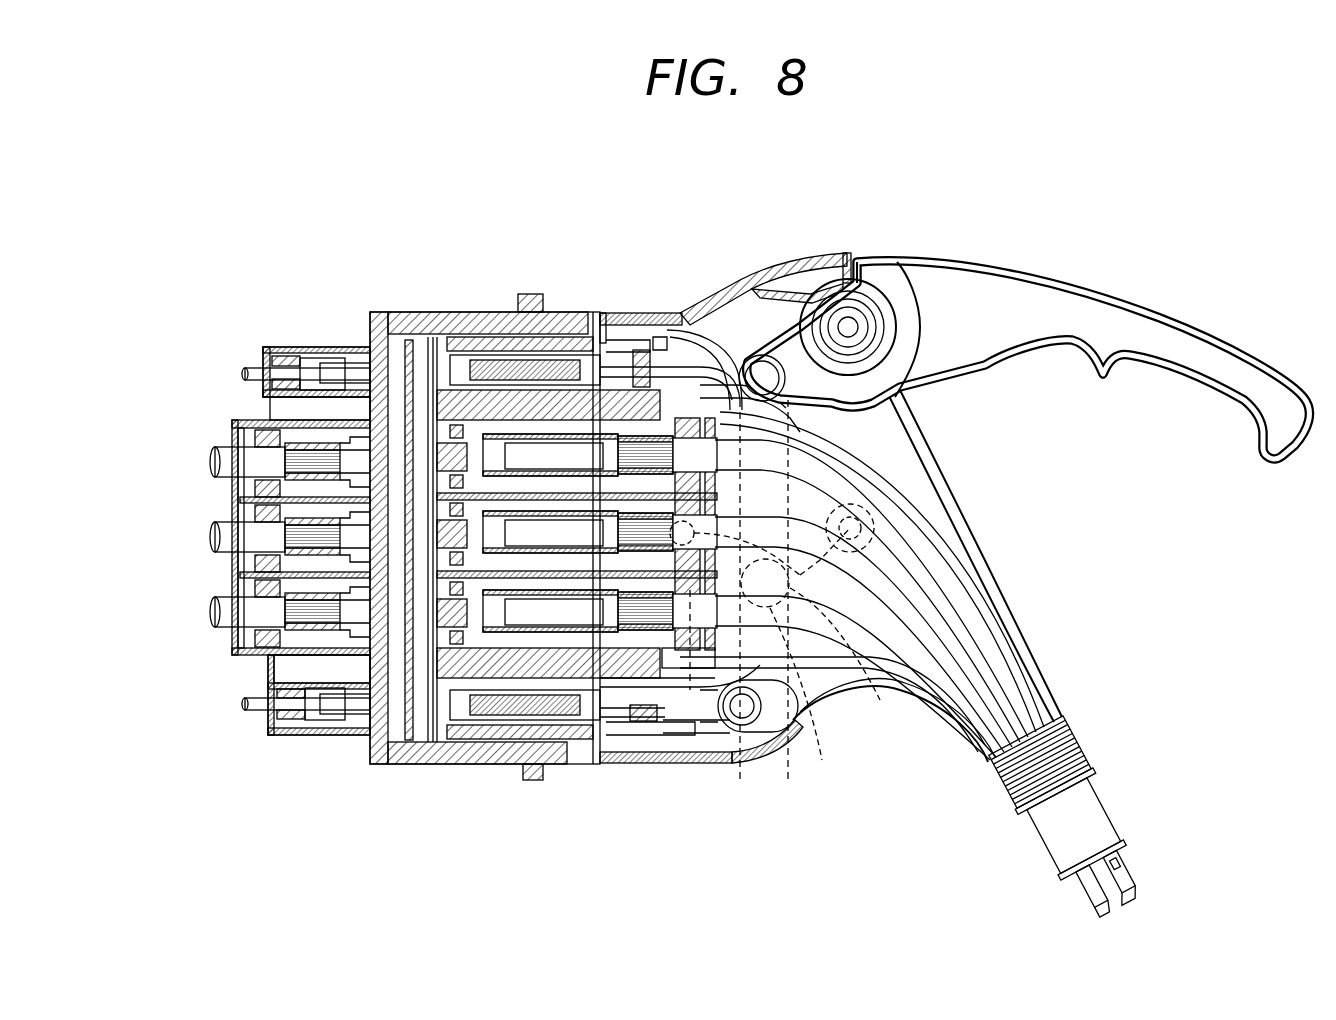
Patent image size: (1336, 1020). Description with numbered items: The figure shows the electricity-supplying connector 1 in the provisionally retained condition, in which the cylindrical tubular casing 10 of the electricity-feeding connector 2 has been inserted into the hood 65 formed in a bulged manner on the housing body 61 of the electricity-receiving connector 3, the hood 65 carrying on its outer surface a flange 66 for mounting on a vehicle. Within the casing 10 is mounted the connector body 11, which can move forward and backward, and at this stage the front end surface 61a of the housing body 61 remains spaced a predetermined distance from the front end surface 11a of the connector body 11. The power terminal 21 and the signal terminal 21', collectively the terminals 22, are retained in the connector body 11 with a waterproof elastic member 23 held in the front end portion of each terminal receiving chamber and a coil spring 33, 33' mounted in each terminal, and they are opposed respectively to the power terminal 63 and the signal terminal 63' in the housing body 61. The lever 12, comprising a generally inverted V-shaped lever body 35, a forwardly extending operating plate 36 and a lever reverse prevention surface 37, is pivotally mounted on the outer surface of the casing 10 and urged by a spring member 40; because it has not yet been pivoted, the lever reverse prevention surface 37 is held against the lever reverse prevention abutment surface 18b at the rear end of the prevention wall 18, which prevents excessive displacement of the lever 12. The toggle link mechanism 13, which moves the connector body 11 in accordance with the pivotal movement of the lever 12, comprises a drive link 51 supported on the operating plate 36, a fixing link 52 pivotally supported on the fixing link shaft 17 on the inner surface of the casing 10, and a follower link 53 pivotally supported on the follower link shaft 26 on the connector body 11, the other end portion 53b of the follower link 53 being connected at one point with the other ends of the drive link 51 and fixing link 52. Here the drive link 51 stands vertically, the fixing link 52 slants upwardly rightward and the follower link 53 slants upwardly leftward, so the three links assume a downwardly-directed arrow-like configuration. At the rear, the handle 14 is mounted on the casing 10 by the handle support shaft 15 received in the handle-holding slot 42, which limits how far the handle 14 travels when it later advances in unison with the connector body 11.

The electricity-supplying connector 1 is at (432, 185).
The electricity-feeding connector 2 is at (683, 302).
The electricity-receiving connector 3 is at (455, 302).
The casing 10 is at (655, 764).
The connector body 11 is at (410, 770).
The front end surface 11a is at (410, 712).
The lever 12 is at (1018, 274).
The toggle link mechanism 13 is at (773, 610).
The handle 14 is at (1036, 646).
The handle support shaft 15 is at (742, 720).
The fixing link shaft 17 is at (932, 494).
The prevention wall 18 is at (800, 272).
The lever reverse prevention abutment surface 18b is at (868, 275).
The power terminal 21 is at (496, 501).
The signal terminal 21' is at (520, 493).
The terminals 22 is at (522, 762).
The waterproof elastic member 23 is at (345, 735).
The follower link shaft 26 is at (685, 705).
The coil spring 33 is at (595, 585).
The coil spring 33' is at (605, 749).
The lever body 35 is at (1103, 320).
The operating plate 36 is at (782, 330).
The lever reverse prevention surface 37 is at (830, 252).
The spring member 40 is at (898, 330).
The handle-holding slot 42 is at (778, 708).
The drive link 51 is at (782, 472).
The fixing link 52 is at (925, 527).
The follower link 53 is at (740, 722).
The other end portion 53b is at (873, 700).
The housing body 61 is at (320, 350).
The front end surface 61a is at (442, 766).
The power terminal 63 is at (270, 493).
The signal terminal 63' is at (307, 478).
The hood 65 is at (388, 318).
The flange 66 is at (530, 296).